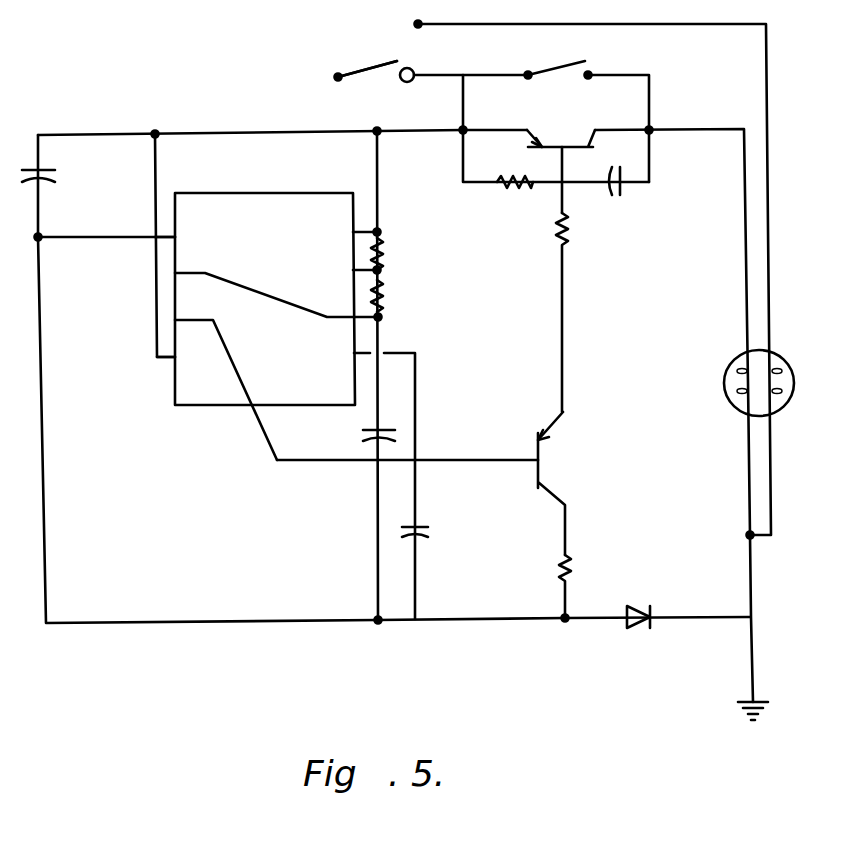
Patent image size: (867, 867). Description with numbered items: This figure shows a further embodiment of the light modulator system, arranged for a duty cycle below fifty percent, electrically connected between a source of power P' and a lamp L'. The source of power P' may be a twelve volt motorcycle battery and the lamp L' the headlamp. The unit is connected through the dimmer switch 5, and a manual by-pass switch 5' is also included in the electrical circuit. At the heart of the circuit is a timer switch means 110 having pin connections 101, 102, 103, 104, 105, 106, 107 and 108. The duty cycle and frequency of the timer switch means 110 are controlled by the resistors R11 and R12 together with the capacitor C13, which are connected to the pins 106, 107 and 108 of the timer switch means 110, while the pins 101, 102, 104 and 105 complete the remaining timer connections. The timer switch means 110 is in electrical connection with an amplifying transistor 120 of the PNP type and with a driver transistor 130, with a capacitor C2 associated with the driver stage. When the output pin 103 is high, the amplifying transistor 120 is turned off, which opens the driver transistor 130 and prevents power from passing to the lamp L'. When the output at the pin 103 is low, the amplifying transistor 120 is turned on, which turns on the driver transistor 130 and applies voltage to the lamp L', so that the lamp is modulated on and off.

The source of power P' is at (355, 57).
The dimmer switch 5 is at (367, 51).
The manual by-pass switch 5' is at (558, 57).
The timer switch means 110 is at (280, 180).
The pin connection 101 is at (182, 227).
The pin connection 102 is at (264, 287).
The output pin 103 is at (226, 381).
The pin connection 104 is at (183, 352).
The pin connection 105 is at (343, 346).
The pin connection 106 is at (349, 310).
The pin connection 107 is at (348, 264).
The pin connection 108 is at (348, 226).
The resistor R11 is at (388, 248).
The resistor R12 is at (388, 296).
The capacitor C13 is at (380, 432).
The capacitor C2 is at (625, 191).
The driver transistor 130 is at (589, 217).
The amplifying transistor 120 is at (572, 466).
The lamp L' is at (780, 383).